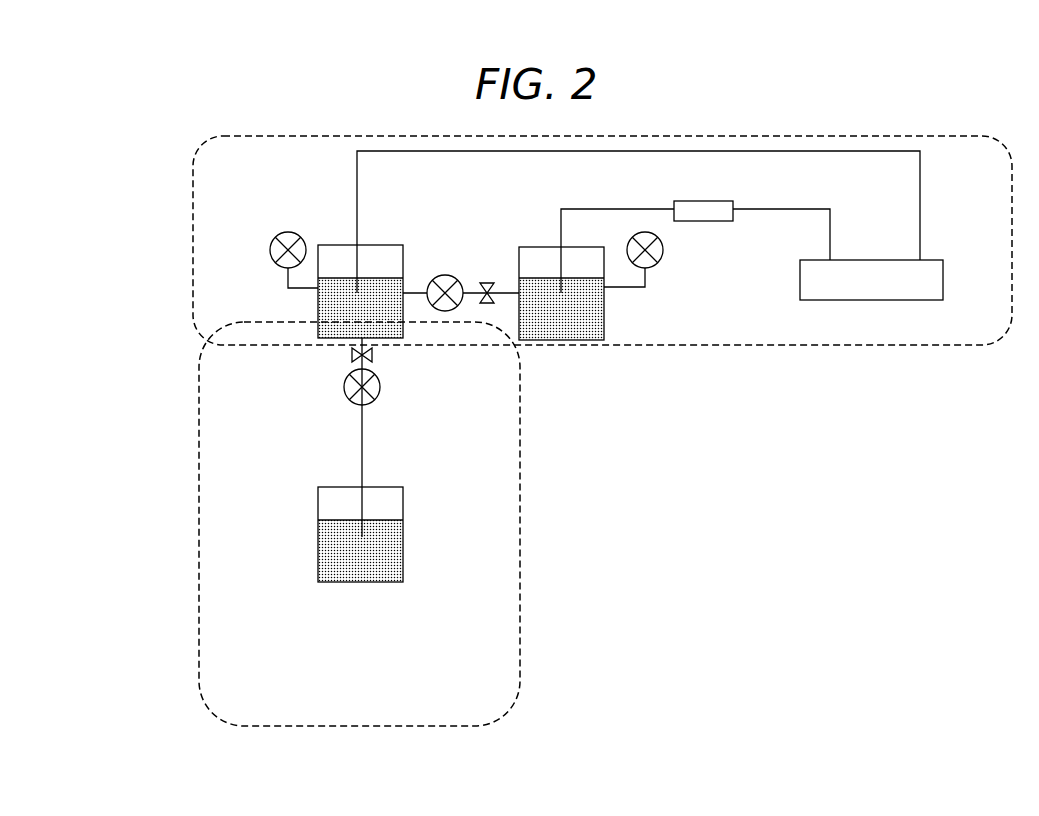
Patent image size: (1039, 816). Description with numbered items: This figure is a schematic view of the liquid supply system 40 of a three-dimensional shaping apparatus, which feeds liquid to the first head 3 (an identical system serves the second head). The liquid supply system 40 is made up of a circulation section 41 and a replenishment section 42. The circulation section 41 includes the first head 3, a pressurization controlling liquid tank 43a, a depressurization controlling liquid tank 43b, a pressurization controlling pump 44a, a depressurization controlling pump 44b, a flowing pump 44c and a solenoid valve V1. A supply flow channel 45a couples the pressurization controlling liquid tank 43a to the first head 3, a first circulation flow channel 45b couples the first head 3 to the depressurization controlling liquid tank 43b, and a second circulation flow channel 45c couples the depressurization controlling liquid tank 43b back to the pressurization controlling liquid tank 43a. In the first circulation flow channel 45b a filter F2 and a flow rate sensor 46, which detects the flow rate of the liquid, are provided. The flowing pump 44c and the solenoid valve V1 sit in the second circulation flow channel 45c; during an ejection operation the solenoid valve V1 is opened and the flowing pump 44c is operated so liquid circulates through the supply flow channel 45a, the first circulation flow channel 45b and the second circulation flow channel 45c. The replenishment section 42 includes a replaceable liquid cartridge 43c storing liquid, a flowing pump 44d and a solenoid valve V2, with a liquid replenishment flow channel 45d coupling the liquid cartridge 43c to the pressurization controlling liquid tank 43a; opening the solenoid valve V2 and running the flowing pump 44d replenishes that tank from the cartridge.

The liquid supply system 40 is at (130, 247).
The circulation section 41 is at (193, 270).
The replenishment section 42 is at (199, 385).
The pressurization controlling liquid tank 43a is at (318, 305).
The depressurization controlling liquid tank 43b is at (604, 323).
The liquid cartridge 43c is at (403, 565).
The pressurization controlling pump 44a is at (275, 240).
The depressurization controlling pump 44b is at (658, 264).
The flowing pump 44c is at (452, 276).
The flowing pump 44d is at (378, 400).
The supply flow channel 45a is at (920, 195).
The first circulation flow channel 45b is at (778, 210).
The second circulation flow channel 45c is at (410, 291).
The liquid replenishment flow channel 45d is at (362, 465).
The flow rate sensor 46 is at (655, 195).
The filter F2 is at (722, 201).
The solenoid valve V1 is at (488, 283).
The solenoid valve V2 is at (372, 355).
The first head 3 is at (862, 300).